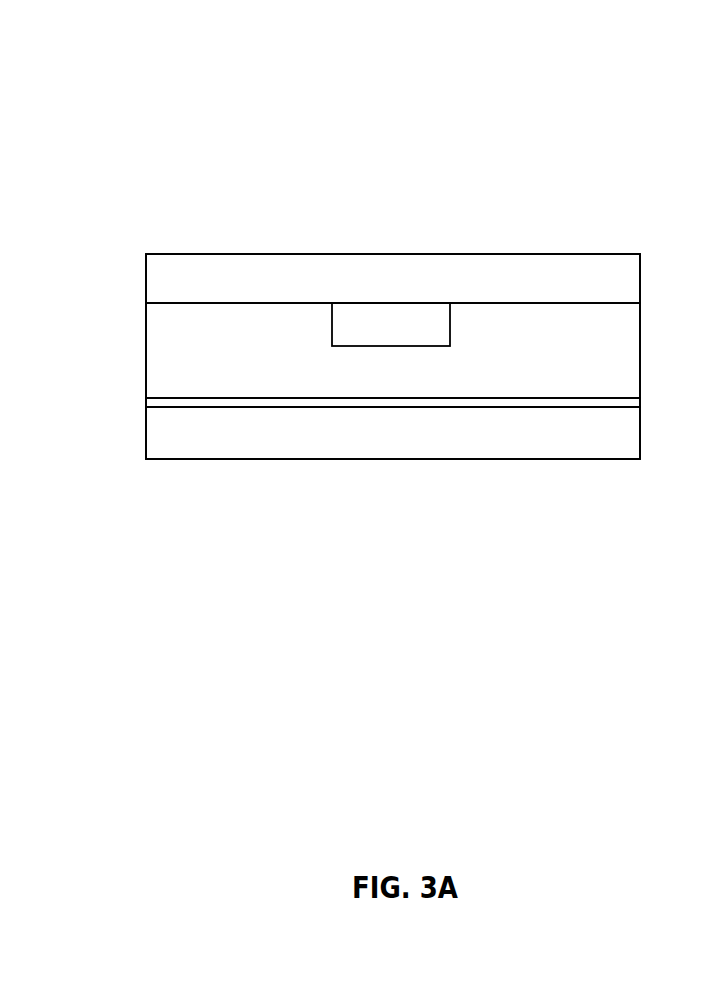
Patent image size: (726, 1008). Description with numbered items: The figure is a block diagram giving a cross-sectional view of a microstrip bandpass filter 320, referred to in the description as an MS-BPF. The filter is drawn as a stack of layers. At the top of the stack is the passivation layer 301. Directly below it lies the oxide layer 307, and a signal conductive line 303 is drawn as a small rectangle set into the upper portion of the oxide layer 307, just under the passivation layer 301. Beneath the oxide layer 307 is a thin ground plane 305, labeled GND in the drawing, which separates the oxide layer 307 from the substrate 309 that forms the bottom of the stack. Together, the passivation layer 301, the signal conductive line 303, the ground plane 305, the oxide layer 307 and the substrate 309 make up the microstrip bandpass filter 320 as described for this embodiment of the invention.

The microstrip bandpass filter 320 is at (163, 110).
The passivation layer 301 is at (393, 278).
The signal conductive line 303 is at (452, 321).
The ground plane 305 is at (640, 404).
The oxide layer 307 is at (283, 357).
The substrate 309 is at (313, 446).